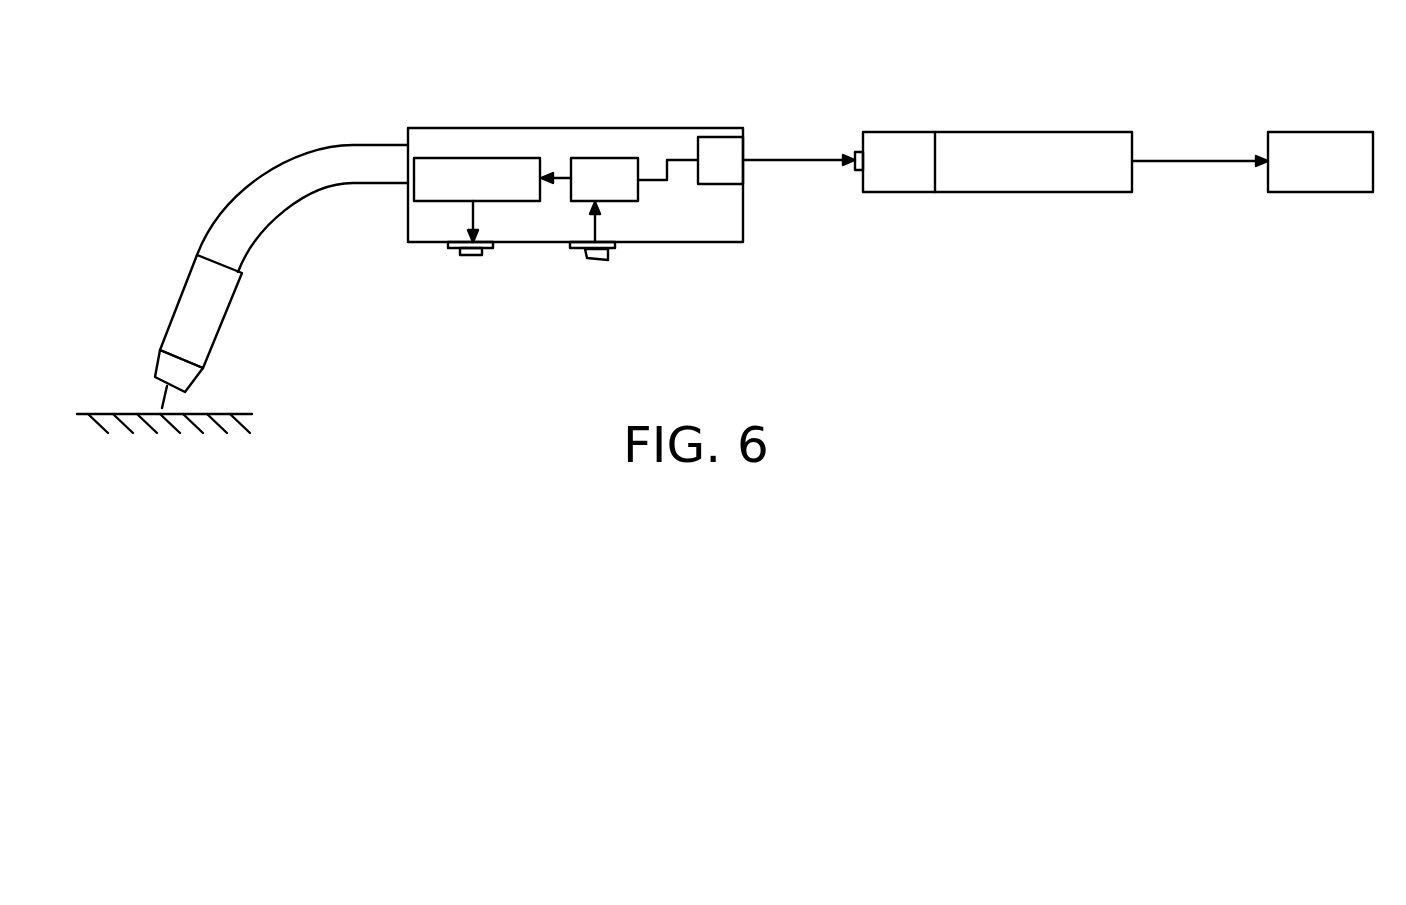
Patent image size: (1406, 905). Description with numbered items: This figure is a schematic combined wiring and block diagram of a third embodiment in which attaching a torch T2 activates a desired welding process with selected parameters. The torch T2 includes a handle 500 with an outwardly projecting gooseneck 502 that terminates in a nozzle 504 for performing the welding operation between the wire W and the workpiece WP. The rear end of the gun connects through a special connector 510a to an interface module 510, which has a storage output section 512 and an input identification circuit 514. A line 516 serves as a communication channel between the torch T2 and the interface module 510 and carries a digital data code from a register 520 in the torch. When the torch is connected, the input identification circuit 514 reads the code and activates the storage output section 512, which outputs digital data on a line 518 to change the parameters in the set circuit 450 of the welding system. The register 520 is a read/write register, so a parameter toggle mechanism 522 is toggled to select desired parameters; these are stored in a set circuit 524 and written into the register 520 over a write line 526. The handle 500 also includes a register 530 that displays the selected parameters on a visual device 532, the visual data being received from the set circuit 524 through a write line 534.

The torch T2 is at (283, 126).
The handle 500 is at (515, 127).
The gooseneck 502 is at (320, 180).
The nozzle 504 is at (232, 307).
The wire W is at (160, 400).
The workpiece WP is at (218, 410).
The register 530 is at (453, 157).
The visual device 532 is at (472, 258).
The write line 534 is at (560, 177).
The set circuit 524 is at (607, 158).
The parameter toggle mechanism 522 is at (598, 260).
The write line 526 is at (662, 180).
The register 520 is at (720, 140).
The line 516 is at (817, 160).
The interface module 510 is at (997, 163).
The special connector 510a is at (858, 172).
The input identification circuit 514 is at (902, 140).
The storage output section 512 is at (1065, 193).
The line 518 is at (1192, 162).
The set circuit 450 is at (1333, 132).